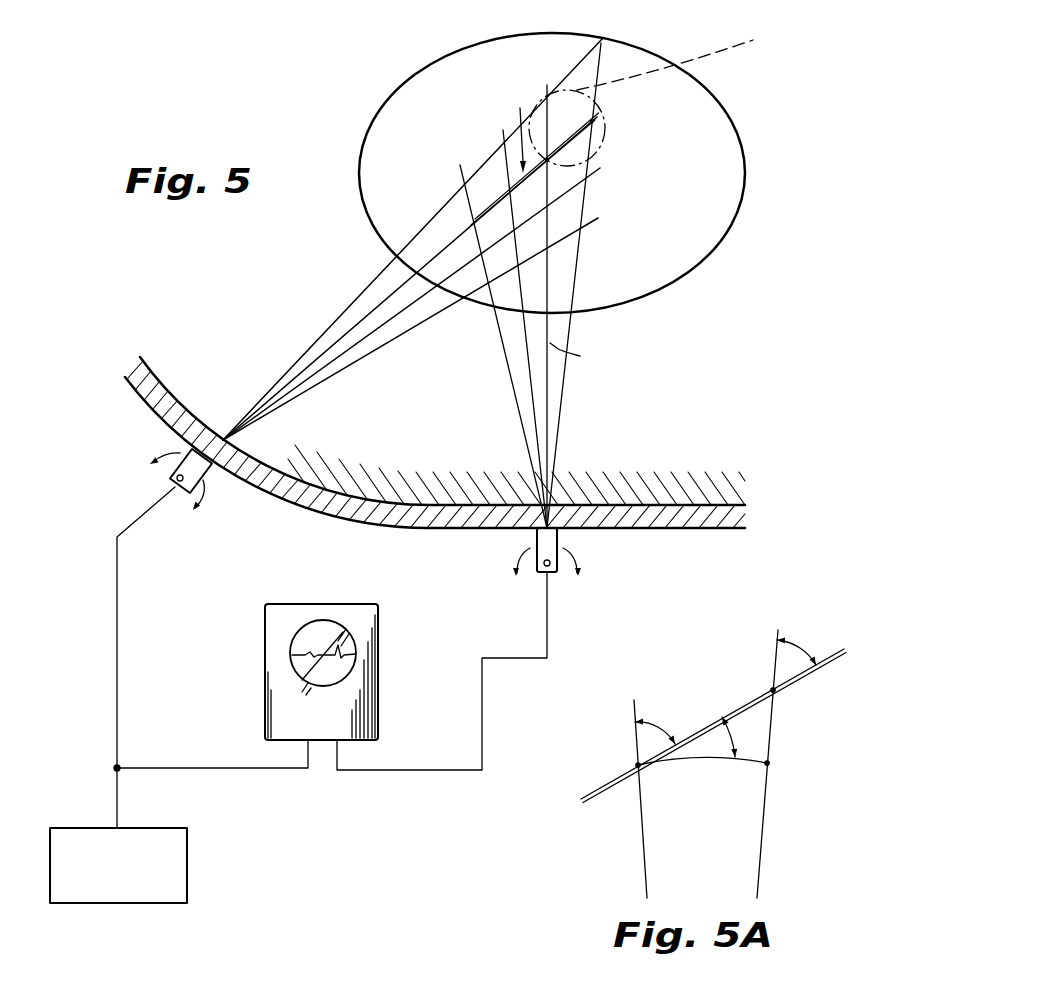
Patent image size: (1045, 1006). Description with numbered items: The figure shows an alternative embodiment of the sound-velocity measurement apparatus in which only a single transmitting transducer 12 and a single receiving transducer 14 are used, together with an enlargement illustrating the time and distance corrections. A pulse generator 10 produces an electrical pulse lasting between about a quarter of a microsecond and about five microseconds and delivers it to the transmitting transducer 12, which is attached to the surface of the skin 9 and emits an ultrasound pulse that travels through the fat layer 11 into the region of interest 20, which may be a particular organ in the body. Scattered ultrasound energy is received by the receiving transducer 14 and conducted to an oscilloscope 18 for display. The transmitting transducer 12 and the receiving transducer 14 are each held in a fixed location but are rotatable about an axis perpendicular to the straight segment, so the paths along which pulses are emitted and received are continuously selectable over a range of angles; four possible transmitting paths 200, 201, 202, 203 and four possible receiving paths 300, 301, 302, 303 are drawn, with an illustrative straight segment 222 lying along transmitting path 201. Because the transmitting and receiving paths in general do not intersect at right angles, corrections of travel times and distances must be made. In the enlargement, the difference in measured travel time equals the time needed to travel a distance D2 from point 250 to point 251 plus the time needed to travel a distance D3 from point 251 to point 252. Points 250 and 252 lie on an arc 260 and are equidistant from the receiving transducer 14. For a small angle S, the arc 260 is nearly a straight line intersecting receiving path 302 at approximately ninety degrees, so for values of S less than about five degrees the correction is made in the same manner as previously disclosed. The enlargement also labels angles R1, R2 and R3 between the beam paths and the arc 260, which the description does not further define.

In FIG. 5, the skin 9 is at (152, 432).
In FIG. 5, the pulse generator 10 is at (153, 905).
In FIG. 5, the fat layer 11 is at (153, 383).
In FIG. 5, the transmitting transducer 12 is at (182, 493).
In FIG. 5, the receiving transducer 14 is at (558, 574).
In FIG. 5, the oscilloscope 18 is at (265, 690).
In FIG. 5, the region of interest 20 is at (737, 140).
In FIG. 5, the transmitting path 200 is at (606, 48).
In FIG. 5, the transmitting path 201 is at (597, 117).
In FIG. 5, the transmitting path 202 is at (600, 168).
In FIG. 5, the transmitting path 203 is at (598, 220).
In FIG. 5, the straight segment 222 is at (516, 129).
In FIG. 5, the point 250 is at (580, 160).
In FIG. 5A, the point 250 is at (636, 765).
In FIG. 5, the point 251 is at (585, 133).
In FIG. 5A, the point 251 is at (775, 691).
In FIG. 5A, the point 252 is at (772, 766).
In FIG. 5A, the arc 260 is at (688, 760).
In FIG. 5, the receiving path 300 is at (458, 165).
In FIG. 5, the receiving path 301 is at (502, 130).
In FIG. 5, the receiving path 302 is at (547, 88).
In FIG. 5A, the receiving path 302 is at (645, 866).
In FIG. 5, the receiving path 303 is at (601, 44).
In FIG. 5A, the receiving path 303 is at (761, 848).
In FIG. 5, the angle S is at (572, 357).
In FIG. 5A, the distance D2 is at (733, 707).
In FIG. 5A, the distance D3 is at (772, 735).
In FIG. 5A, the angle between beam and axis 302 R1 is at (657, 725).
In FIG. 5A, the angle between beam and axis 303 R2 is at (795, 652).
In FIG. 5A, the angle between beam and arc 260 R3 is at (729, 740).